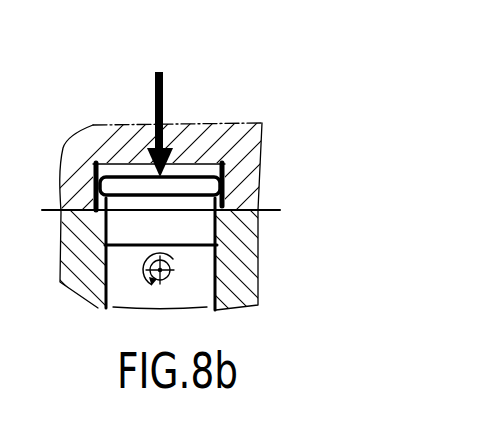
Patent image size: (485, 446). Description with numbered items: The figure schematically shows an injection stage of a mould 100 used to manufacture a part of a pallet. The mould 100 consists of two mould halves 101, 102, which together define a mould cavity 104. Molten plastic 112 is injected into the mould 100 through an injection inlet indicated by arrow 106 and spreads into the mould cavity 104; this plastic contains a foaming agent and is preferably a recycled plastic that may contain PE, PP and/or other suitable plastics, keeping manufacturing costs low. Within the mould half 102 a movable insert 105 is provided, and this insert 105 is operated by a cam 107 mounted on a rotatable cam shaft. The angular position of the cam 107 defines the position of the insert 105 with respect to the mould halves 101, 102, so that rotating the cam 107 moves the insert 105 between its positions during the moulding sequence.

The mould 100 is at (296, 100).
The mould half 101 is at (240, 205).
The mould half 102 is at (253, 236).
The mould cavity 104 is at (230, 164).
The movable insert 105 is at (218, 249).
The injection inlet 106 is at (163, 113).
The cam 107 is at (187, 268).
The molten plastic 112 is at (170, 178).